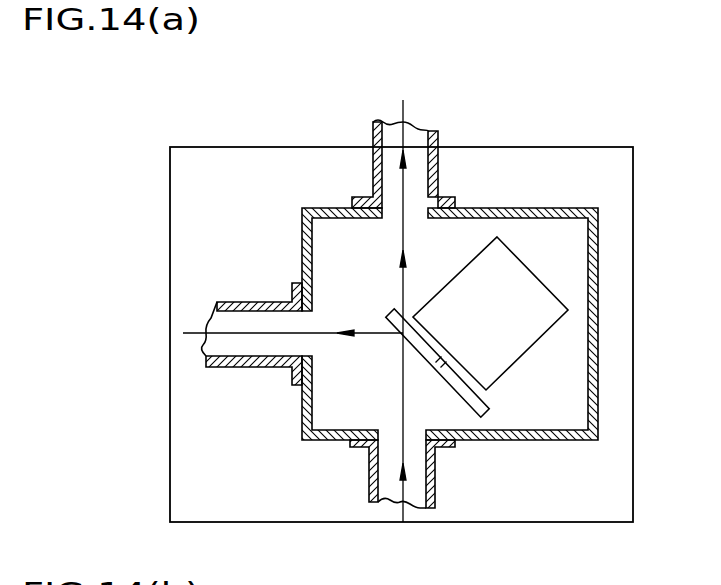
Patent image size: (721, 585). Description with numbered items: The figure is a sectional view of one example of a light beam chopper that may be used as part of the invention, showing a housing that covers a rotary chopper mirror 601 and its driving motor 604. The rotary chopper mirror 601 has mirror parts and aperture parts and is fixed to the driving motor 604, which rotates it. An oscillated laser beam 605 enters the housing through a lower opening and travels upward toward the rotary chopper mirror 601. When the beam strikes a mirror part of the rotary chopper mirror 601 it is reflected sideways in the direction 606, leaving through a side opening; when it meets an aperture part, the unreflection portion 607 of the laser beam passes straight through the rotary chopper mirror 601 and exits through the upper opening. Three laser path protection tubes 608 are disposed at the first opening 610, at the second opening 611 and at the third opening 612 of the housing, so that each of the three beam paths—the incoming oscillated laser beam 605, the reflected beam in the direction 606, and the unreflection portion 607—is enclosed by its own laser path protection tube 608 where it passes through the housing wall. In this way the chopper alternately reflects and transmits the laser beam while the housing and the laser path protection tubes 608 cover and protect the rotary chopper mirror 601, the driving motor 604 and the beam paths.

The rotary chopper mirror 601 is at (493, 410).
The driving motor 604 is at (552, 308).
The oscillated laser beam 605 is at (403, 505).
The reflection direction 606 is at (195, 331).
The unreflection portion of the laser beam 607 is at (410, 115).
The laser path protection tube 608 is at (438, 142).
The first opening 610 is at (392, 430).
The second opening 611 is at (305, 345).
The third opening 612 is at (422, 217).